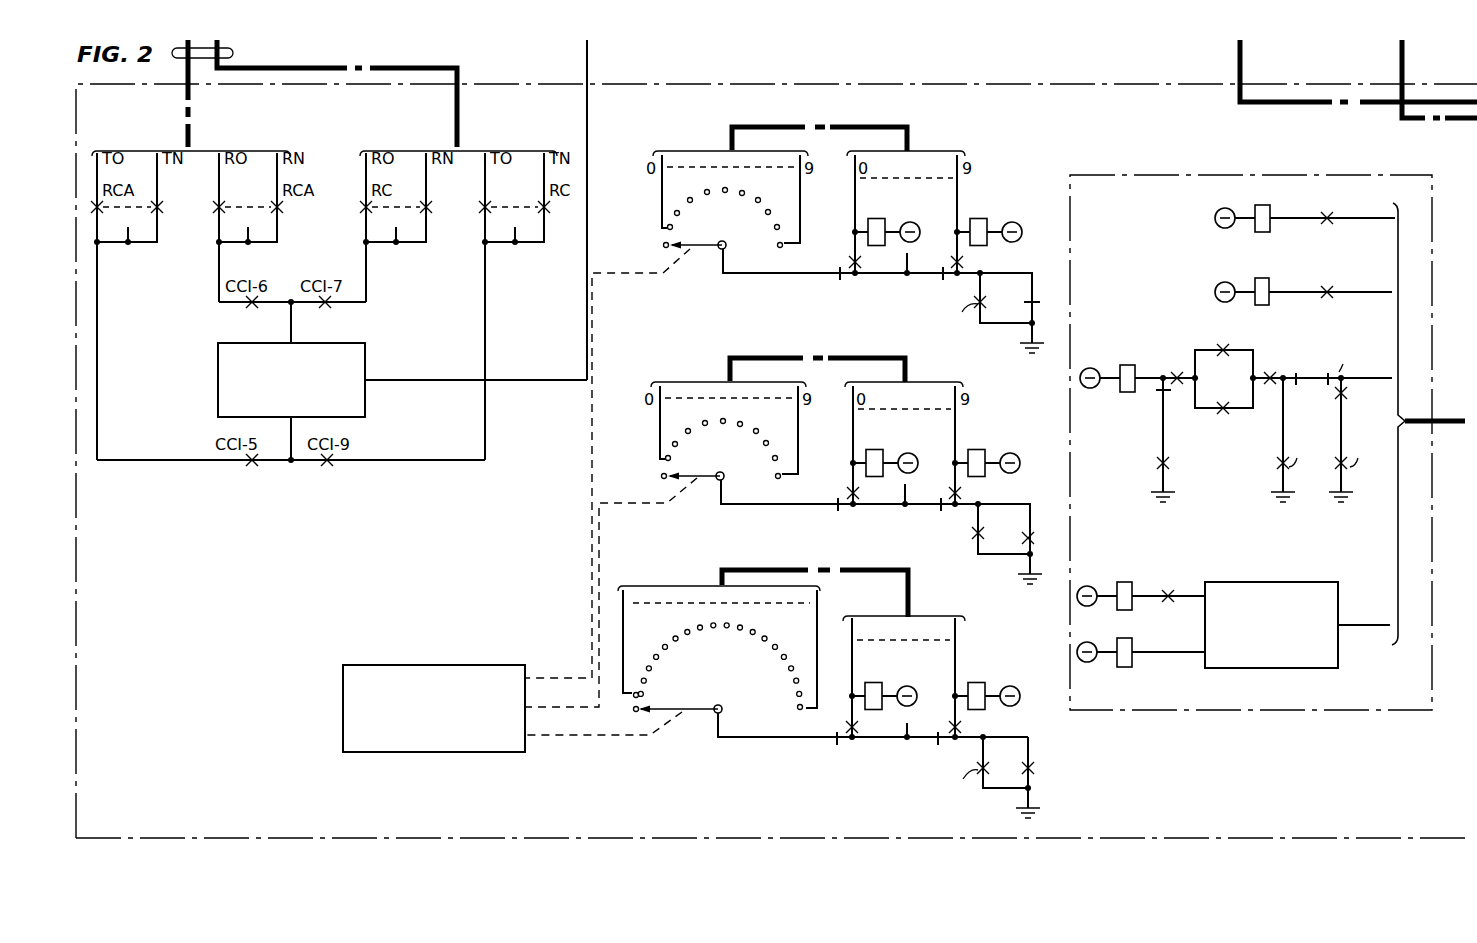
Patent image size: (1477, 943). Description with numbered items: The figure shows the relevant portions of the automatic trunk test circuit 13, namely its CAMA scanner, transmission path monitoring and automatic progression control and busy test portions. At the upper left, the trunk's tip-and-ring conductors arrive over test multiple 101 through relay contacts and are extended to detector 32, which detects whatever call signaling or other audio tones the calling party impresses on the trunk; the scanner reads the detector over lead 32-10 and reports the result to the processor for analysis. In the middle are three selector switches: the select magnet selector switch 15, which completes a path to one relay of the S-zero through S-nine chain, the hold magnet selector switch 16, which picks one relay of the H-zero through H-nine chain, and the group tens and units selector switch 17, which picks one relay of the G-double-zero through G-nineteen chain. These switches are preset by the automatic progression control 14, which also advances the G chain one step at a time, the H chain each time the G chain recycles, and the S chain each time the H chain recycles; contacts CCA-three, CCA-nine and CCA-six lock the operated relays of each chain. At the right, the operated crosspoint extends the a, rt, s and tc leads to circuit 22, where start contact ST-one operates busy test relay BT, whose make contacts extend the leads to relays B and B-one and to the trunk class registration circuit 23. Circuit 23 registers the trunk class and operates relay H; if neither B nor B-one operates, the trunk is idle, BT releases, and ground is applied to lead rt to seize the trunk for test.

The automatic trunk test circuit 13 is at (457, 820).
The automatic progression control 14 is at (430, 664).
The select magnet selector switch 15 is at (731, 227).
The hold magnet selector switch 16 is at (727, 458).
The group tens and units selector switch 17 is at (723, 683).
The busy test circuit 22 is at (1267, 425).
The trunk class registration circuit 23 is at (1267, 582).
The detector 32 is at (218, 381).
The lead 32-10 is at (588, 64).
The test multiple 101 is at (233, 53).